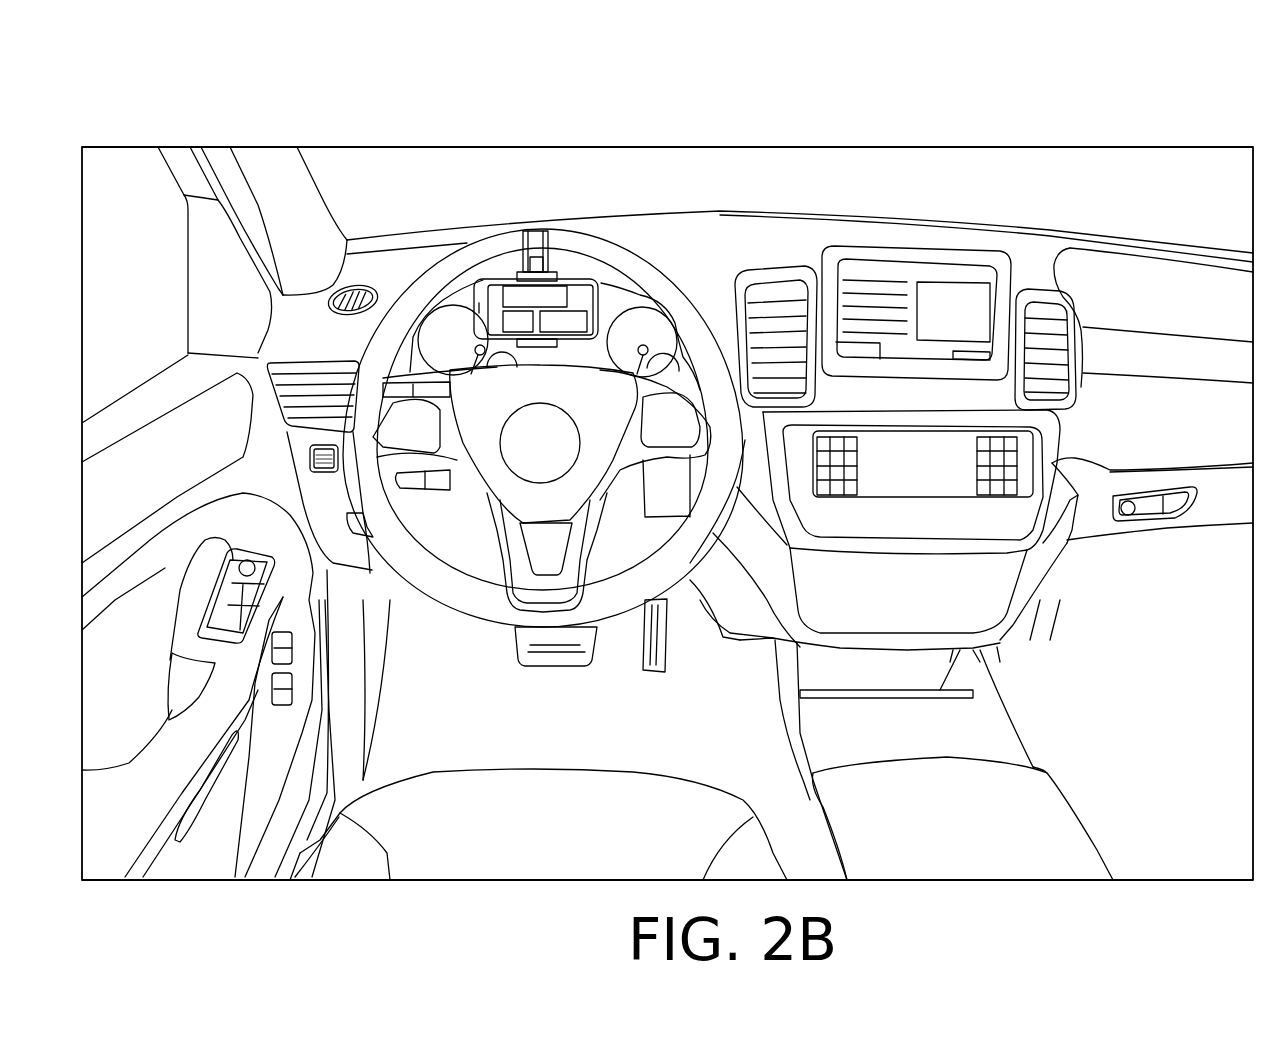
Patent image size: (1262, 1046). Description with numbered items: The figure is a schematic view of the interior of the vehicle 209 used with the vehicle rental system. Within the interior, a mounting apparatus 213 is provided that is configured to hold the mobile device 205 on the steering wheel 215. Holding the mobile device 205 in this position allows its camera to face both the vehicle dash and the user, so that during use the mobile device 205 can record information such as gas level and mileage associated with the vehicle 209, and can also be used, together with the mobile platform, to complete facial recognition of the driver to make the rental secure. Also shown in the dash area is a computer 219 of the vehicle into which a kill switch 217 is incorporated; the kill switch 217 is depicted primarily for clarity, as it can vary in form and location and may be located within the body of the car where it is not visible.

The vehicle 209 is at (1147, 127).
The steering wheel 215 is at (483, 233).
The mounting apparatus 213 is at (543, 237).
The mobile device 205 is at (580, 283).
The computer 219 is at (907, 240).
The kill switch 217 is at (973, 283).